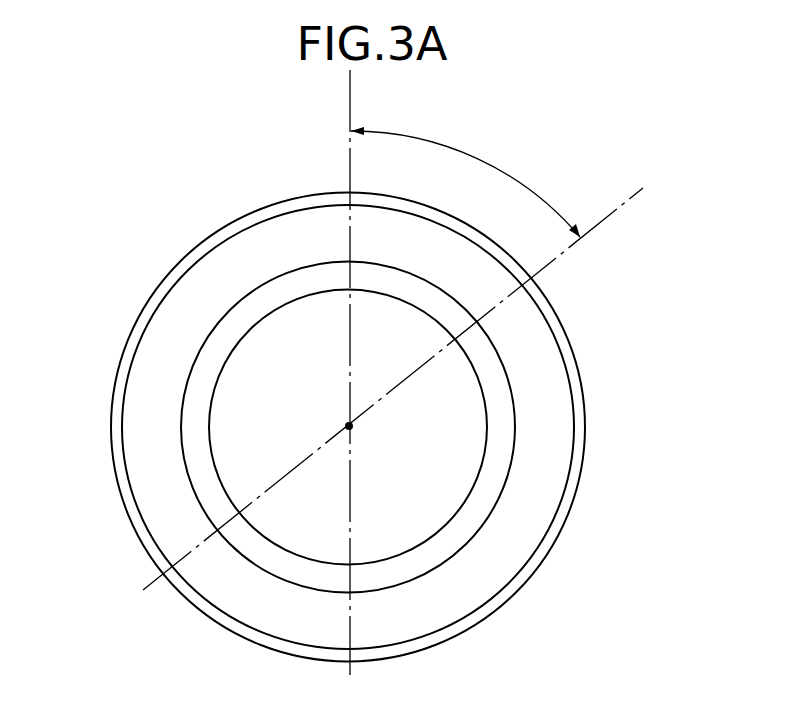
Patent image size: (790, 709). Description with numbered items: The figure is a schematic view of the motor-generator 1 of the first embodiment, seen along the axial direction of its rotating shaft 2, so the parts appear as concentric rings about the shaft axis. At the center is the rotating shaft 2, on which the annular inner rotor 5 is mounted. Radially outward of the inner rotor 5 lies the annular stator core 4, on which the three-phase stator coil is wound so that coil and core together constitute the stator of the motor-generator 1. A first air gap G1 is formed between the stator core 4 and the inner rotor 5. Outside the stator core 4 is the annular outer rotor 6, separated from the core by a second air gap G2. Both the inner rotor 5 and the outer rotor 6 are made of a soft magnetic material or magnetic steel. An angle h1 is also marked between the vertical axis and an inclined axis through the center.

The motor-generator 1 is at (199, 194).
The rotating shaft 2 is at (347, 425).
The annular stator core 4 is at (547, 400).
The annular inner rotor 5 is at (483, 490).
The annular outer rotor 6 is at (580, 452).
The first air gap G1 is at (193, 363).
The second air gap G2 is at (188, 268).
The angle h1 is at (465, 181).